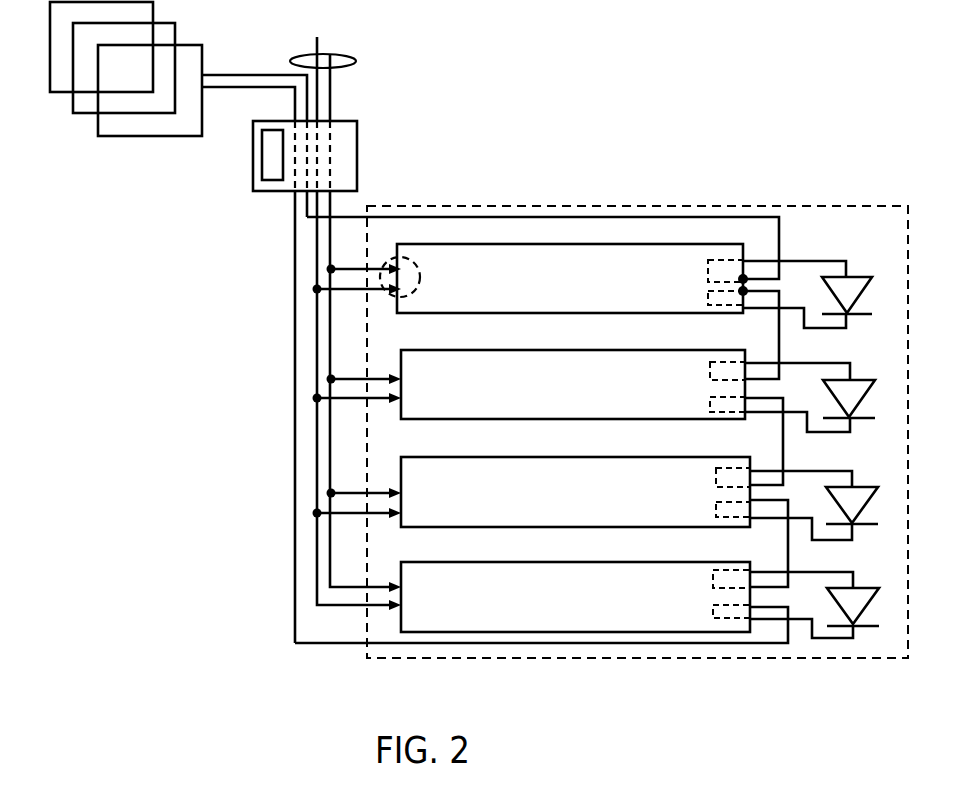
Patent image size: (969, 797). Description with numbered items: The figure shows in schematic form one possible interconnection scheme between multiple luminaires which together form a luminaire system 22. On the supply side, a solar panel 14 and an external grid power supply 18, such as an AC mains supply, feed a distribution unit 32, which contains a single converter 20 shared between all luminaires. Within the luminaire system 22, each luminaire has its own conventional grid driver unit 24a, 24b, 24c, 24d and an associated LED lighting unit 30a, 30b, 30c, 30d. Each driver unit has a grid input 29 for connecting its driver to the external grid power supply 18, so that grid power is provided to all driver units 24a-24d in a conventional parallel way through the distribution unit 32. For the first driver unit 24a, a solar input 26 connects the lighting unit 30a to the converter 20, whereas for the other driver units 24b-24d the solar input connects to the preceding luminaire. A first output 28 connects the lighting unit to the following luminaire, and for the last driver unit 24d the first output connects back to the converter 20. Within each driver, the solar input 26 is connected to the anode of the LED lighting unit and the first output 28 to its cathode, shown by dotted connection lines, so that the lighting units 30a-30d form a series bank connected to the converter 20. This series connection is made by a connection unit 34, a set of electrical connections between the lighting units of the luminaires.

The solar panel 14 is at (147, 134).
The external grid power supply 18 is at (356, 58).
The converter 20 is at (253, 167).
The distribution unit 32 is at (357, 150).
The luminaire system 22 is at (820, 205).
The grid input 29 is at (408, 255).
The first driver unit 24a is at (570, 278).
The driver unit 24b is at (573, 384).
The driver unit 24c is at (575, 492).
The last driver unit 24d is at (575, 597).
The solar input 26 is at (743, 277).
The first output 28 is at (740, 290).
The LED lighting unit 30a is at (871, 285).
The LED lighting unit 30b is at (875, 398).
The LED lighting unit 30c is at (876, 502).
The LED lighting unit 30d is at (873, 602).
The connection unit 34 is at (683, 217).